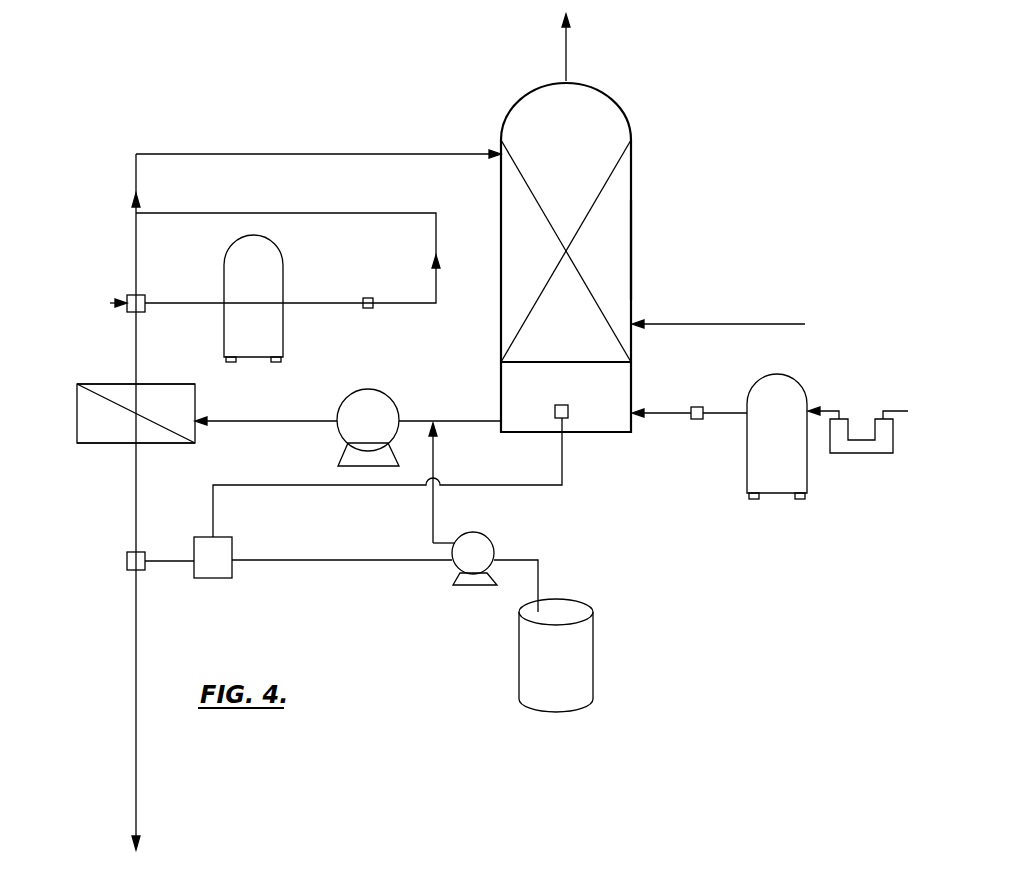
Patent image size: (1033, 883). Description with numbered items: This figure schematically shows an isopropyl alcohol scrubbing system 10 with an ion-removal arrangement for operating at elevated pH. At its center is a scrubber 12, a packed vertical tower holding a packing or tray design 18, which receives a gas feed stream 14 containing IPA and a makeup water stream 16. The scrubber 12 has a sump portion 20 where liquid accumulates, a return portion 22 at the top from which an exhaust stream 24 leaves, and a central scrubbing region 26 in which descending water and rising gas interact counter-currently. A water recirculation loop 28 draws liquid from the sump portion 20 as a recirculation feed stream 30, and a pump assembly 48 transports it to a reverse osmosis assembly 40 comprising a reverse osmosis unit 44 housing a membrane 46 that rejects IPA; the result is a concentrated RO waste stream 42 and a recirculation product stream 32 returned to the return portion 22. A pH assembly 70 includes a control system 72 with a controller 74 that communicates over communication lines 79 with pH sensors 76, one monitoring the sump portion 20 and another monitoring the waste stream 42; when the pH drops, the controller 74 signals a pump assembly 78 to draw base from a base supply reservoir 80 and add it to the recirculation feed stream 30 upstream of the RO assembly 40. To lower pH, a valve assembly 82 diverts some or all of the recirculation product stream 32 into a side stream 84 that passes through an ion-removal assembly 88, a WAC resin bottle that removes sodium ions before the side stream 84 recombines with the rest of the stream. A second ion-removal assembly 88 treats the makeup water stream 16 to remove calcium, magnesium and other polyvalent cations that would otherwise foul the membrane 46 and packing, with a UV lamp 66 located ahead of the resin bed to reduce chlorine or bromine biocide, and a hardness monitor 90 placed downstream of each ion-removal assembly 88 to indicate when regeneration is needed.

The isopropyl alcohol scrubbing system 10 is at (648, 62).
The scrubber 12 is at (640, 196).
The gas feed stream 14 is at (700, 323).
The makeup water stream 16 is at (729, 417).
The packing or tray design 18 is at (632, 245).
The sump portion 20 is at (582, 393).
The return portion 22 is at (582, 145).
The exhaust stream 24 is at (567, 52).
The central scrubbing region 26 is at (582, 310).
The water recirculation loop 28 is at (477, 408).
The recirculation feed stream 30 is at (462, 423).
The recirculation product stream 32 is at (448, 154).
The reverse osmosis assembly 40 is at (70, 376).
The concentrated RO waste stream 42 is at (134, 490).
The reverse osmosis unit 44 is at (77, 404).
The membrane 46 is at (77, 424).
The pump assembly 48 is at (384, 433).
The UV lamp 66 is at (862, 453).
The pH assembly 70 is at (428, 625).
The control system 72 is at (242, 580).
The controller 74 is at (214, 535).
The pH sensor 76 is at (568, 411).
The pump assembly 78 is at (489, 566).
The communication line 79 is at (164, 566).
The base supply reservoir 80 is at (572, 673).
The valve assembly 82 is at (110, 303).
The side stream 84 is at (148, 305).
The ion-removal assembly 88 is at (792, 467).
The hardness monitor 90 is at (697, 406).